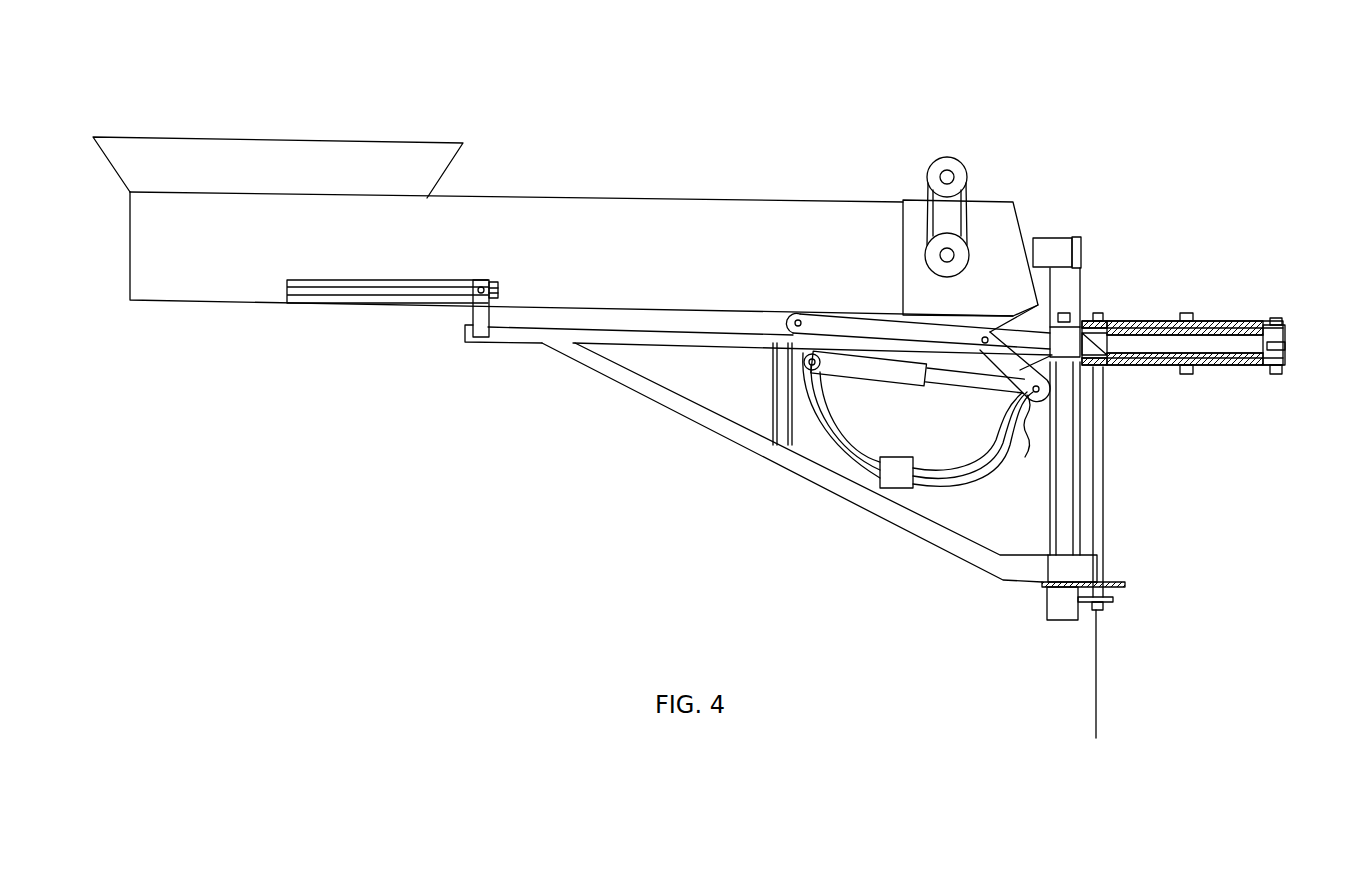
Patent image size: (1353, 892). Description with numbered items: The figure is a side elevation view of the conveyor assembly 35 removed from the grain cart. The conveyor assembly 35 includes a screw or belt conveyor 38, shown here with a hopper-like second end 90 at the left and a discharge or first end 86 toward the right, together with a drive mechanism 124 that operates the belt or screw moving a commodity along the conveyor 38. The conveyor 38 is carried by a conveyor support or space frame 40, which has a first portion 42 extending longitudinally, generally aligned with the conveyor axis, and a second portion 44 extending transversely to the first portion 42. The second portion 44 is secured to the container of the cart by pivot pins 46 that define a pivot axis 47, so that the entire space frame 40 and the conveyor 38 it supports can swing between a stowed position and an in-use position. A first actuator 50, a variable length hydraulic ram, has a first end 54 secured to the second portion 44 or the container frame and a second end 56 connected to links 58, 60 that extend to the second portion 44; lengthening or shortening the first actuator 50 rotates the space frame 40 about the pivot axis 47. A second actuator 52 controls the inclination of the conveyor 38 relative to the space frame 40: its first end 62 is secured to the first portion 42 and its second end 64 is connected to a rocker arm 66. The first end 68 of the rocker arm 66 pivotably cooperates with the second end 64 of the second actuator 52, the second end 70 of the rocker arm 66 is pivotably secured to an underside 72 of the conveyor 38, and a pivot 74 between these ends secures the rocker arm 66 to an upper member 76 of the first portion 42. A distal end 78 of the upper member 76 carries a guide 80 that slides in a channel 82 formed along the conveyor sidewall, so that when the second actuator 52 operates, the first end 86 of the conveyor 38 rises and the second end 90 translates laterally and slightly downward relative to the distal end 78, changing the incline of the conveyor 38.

The conveyor assembly 35 is at (950, 50).
The conveyor 38 is at (703, 250).
The space frame 40 is at (1020, 632).
The first portion 42 is at (643, 395).
The second portion 44 is at (1082, 282).
The pivot pins 46 is at (1098, 315).
The pivot axis 47 is at (1097, 693).
The first actuator 50 is at (1210, 343).
The second actuator 52 is at (868, 370).
The first end 54 is at (1115, 367).
The second end 56 is at (1287, 347).
The link 58 is at (1237, 372).
The link 60 is at (1157, 368).
The first end 62 is at (808, 418).
The second end 64 is at (1000, 420).
The rocker arm 66 is at (828, 322).
The first end 68 is at (1023, 444).
The second end 70 is at (783, 307).
The underside 72 is at (720, 312).
The pivot 74 is at (985, 338).
The upper member 76 is at (630, 345).
The distal end 78 is at (465, 333).
The guide 80 is at (480, 282).
The channel 82 is at (397, 292).
The first end 86 is at (1017, 233).
The second end 90 is at (130, 252).
The drive mechanism 124 is at (967, 182).